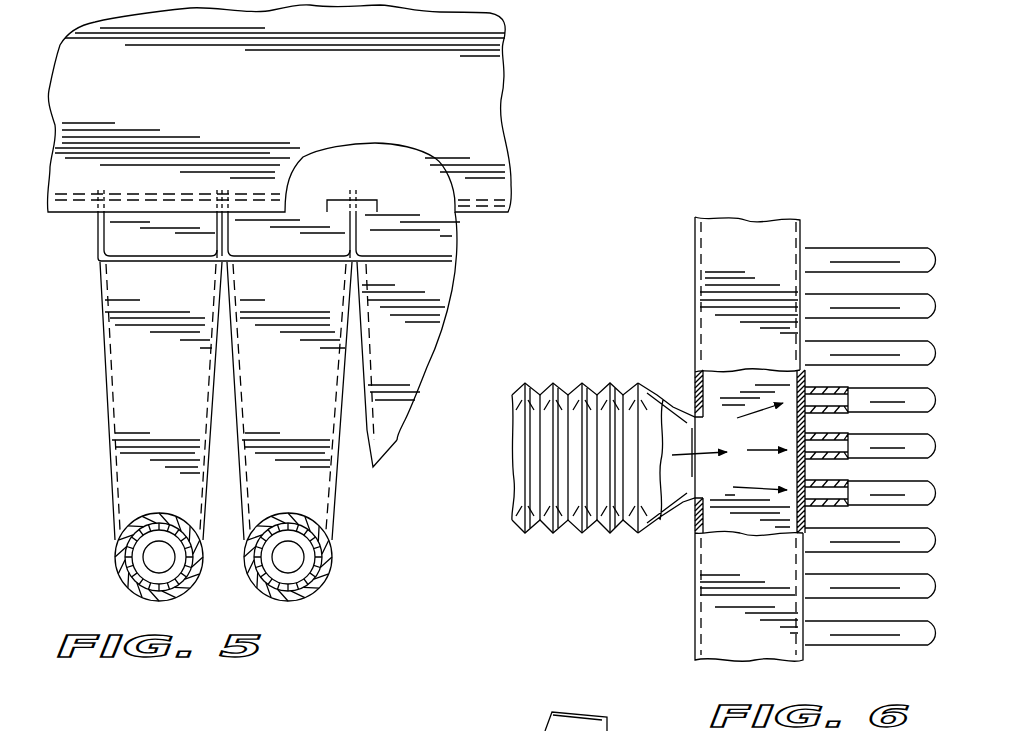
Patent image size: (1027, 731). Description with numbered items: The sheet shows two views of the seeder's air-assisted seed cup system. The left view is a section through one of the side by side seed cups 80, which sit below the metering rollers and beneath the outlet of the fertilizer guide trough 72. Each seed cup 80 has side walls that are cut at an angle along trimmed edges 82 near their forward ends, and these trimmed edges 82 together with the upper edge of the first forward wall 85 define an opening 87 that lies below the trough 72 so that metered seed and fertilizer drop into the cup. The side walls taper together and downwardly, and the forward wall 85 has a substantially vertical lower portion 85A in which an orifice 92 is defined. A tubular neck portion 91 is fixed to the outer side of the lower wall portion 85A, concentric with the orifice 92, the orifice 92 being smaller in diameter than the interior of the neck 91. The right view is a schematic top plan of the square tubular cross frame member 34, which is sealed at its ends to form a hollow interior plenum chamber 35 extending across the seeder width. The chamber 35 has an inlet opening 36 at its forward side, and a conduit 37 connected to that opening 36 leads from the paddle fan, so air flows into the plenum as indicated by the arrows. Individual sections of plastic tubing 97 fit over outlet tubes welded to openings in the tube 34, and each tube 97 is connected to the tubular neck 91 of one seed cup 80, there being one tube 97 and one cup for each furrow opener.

In FIG. 5, the guide trough 72 is at (480, 77).
In FIG. 5, the trimmed edges 82 is at (100, 230).
In FIG. 5, the opening 87 is at (373, 243).
In FIG. 5, the seed cups 80 is at (143, 355).
In FIG. 5, the first forward wall 85 is at (322, 388).
In FIG. 5, the lower portion of forward wall 85A is at (335, 502).
In FIG. 5, the tubular neck portion 91 is at (317, 538).
In FIG. 5, the orifice 92 is at (160, 562).
In FIG. 5, the plastic tubes 97 is at (345, 512).
In FIG. 6, the plastic tubes 97 is at (895, 312).
In FIG. 6, the square tubular cross frame member 34 is at (770, 238).
In FIG. 6, the hollow interior chamber 35 is at (713, 513).
In FIG. 6, the inlet opening 36 is at (703, 428).
In FIG. 6, the conduit 37 is at (582, 385).